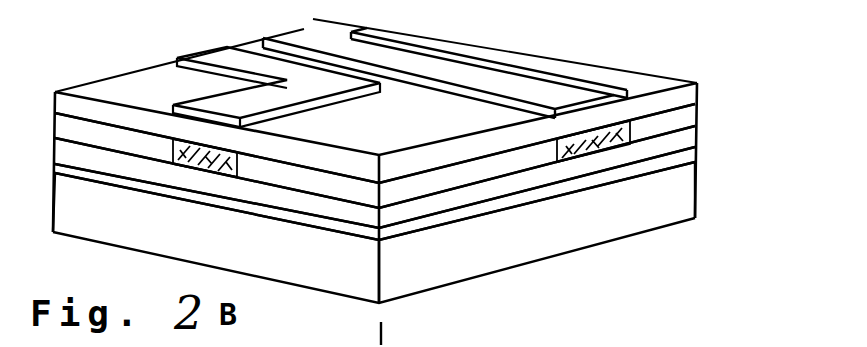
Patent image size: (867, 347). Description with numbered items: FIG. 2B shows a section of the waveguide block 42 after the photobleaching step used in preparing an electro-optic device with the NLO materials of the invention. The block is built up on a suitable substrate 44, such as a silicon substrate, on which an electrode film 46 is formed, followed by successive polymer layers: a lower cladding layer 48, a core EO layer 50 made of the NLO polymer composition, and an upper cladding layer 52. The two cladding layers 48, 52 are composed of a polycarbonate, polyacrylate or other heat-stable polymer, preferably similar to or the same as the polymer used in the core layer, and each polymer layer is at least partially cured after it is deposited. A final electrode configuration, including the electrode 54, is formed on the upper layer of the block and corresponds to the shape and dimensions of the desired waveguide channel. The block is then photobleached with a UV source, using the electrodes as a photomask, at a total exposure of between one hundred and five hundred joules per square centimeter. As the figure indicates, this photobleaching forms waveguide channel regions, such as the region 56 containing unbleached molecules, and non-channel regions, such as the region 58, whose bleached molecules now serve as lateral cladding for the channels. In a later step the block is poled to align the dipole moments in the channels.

The waveguide block 42 is at (554, 62).
The substrate 44 is at (643, 212).
The electrode film 46 is at (697, 172).
The lower cladding layer 48 is at (697, 144).
The core EO layer 50 is at (699, 117).
The upper cladding layer 52 is at (688, 99).
The electrode 54 is at (330, 42).
The waveguide channel region 56 is at (577, 165).
The non-channel region 58 is at (445, 190).